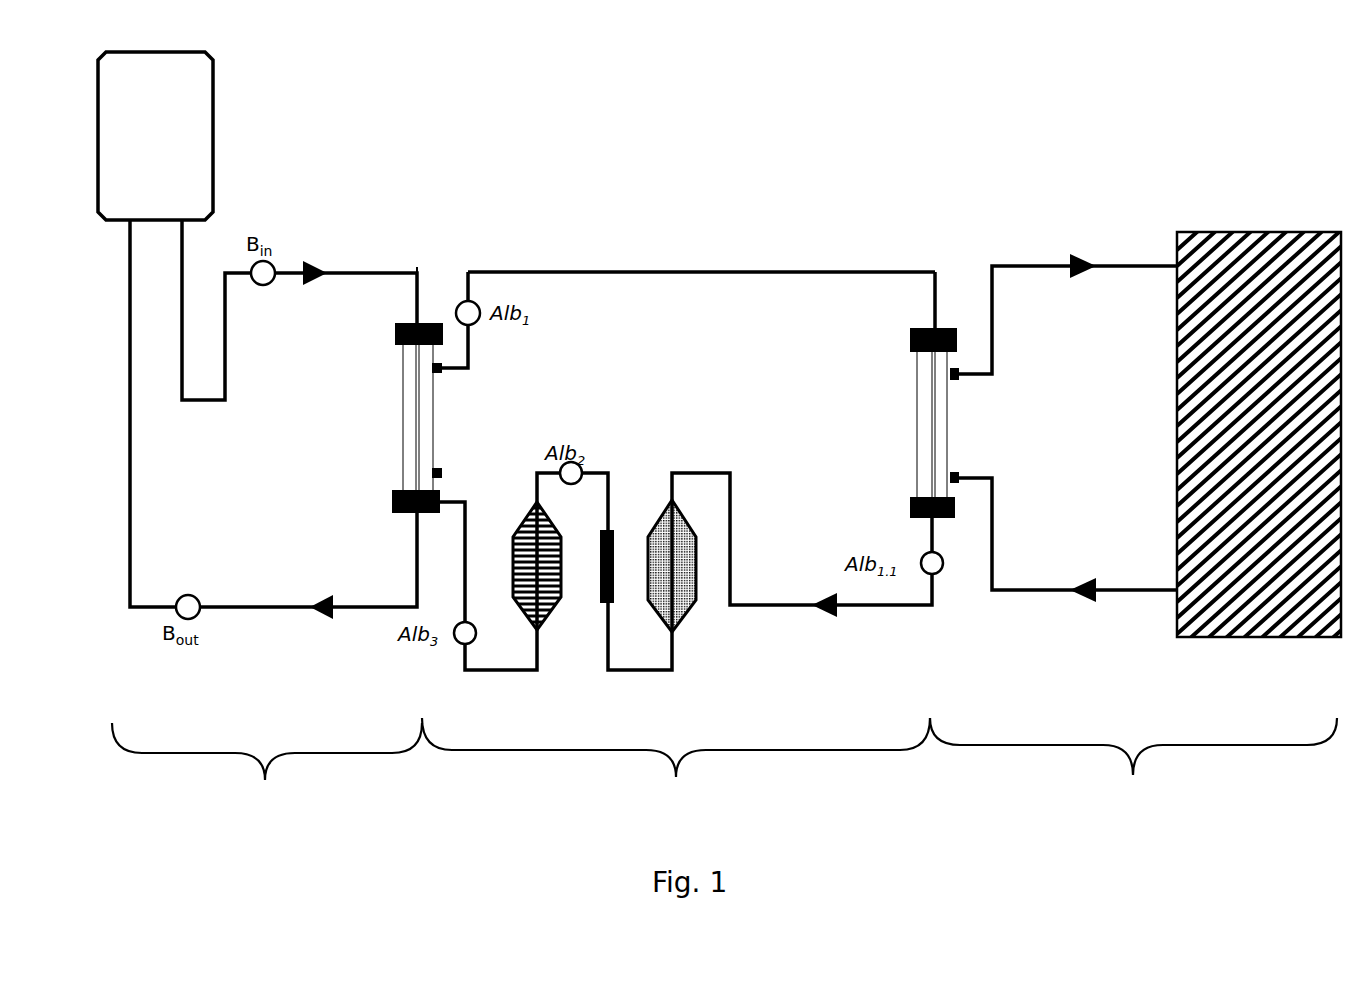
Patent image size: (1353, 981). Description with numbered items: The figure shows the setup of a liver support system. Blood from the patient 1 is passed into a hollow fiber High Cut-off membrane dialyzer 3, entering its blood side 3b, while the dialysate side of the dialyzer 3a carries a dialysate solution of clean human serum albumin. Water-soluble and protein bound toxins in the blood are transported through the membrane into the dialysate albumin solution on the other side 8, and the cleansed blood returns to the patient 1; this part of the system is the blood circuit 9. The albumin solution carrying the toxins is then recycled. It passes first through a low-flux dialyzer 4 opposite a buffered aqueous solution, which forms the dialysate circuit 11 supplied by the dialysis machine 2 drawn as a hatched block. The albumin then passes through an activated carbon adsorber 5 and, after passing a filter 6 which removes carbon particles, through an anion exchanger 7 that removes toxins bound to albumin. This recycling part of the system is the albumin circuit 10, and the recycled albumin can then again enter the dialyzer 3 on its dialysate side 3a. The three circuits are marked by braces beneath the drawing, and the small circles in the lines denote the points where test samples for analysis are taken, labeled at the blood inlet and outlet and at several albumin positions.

The patient 1 is at (213, 89).
The dialysis machine 2 is at (1257, 232).
The High Cut-off membrane dialyzer 3 is at (403, 407).
The dialysate side of the dialyzer 3a is at (425, 426).
The blood side of the dialyzer 3b is at (409, 462).
The low-flux dialyzer 4 is at (920, 417).
The activated carbon adsorber 5 is at (688, 613).
The filter 6 is at (613, 530).
The anion exchanger 7 is at (550, 610).
The dialysate albumin solution side 8 is at (642, 270).
The blood circuit 9 is at (267, 775).
The albumin circuit 10 is at (676, 769).
The dialysate circuit 11 is at (1133, 765).